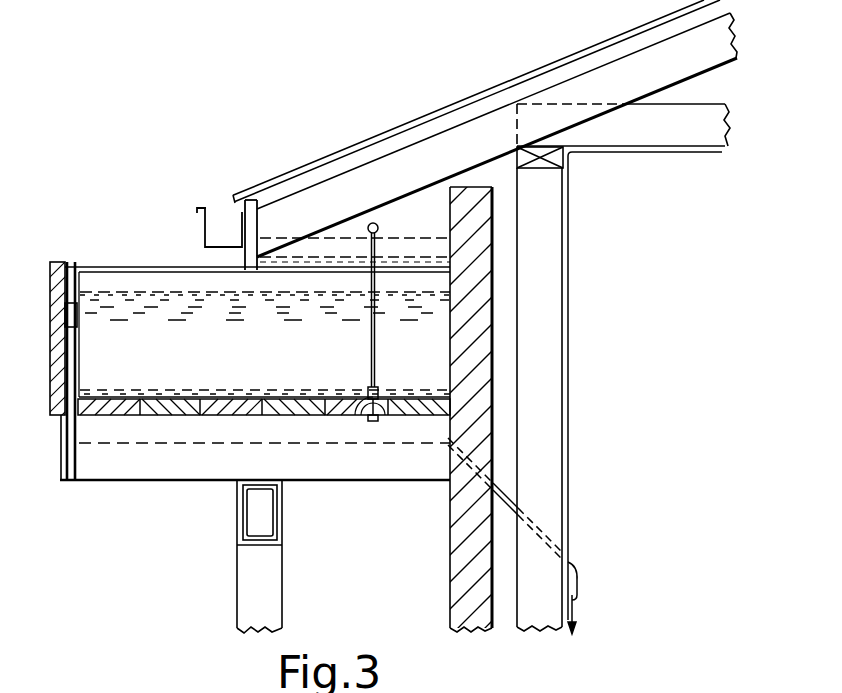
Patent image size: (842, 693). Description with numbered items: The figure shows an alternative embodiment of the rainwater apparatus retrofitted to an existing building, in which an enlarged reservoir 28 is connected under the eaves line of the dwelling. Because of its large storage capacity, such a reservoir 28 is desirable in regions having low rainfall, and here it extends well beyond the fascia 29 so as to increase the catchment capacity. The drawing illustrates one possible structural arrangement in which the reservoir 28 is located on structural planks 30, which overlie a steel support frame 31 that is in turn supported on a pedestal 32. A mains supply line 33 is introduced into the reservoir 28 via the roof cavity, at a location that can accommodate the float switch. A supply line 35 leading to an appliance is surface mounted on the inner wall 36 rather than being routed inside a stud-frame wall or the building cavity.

The reservoir 28 is at (147, 327).
The fascia 29 is at (250, 225).
The structural planks 30 is at (212, 415).
The steel support frame 31 is at (395, 468).
The pedestal 32 is at (248, 582).
The mains supply line 33 is at (379, 227).
The supply line 35 is at (523, 516).
The inner wall 36 is at (548, 312).